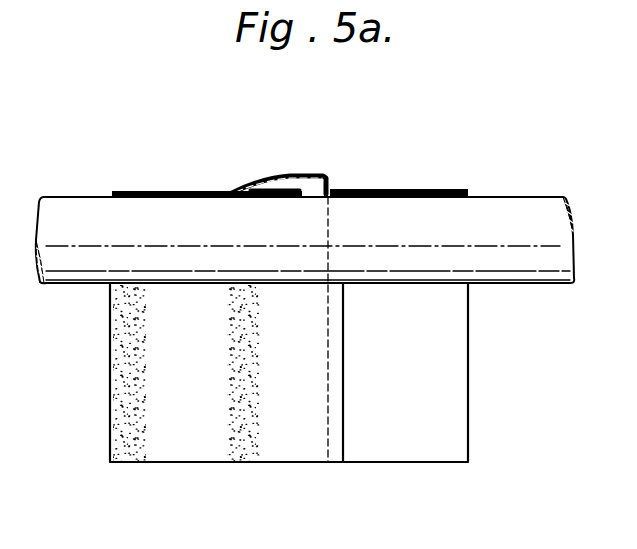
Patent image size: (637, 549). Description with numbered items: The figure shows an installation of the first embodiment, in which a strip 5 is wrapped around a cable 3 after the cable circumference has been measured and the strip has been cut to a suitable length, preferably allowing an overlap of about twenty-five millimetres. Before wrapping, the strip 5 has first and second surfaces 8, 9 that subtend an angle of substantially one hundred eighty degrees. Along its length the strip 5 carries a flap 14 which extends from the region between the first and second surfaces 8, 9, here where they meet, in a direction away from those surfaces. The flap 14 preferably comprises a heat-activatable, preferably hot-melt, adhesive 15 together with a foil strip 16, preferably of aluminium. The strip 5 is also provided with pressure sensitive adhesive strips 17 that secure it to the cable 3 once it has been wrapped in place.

The cable 3 is at (500, 207).
The strip 5 is at (144, 468).
The first surface 8 is at (281, 178).
The second surface 9 is at (165, 192).
The flap 14 is at (361, 190).
The heat-activatable adhesive 15 is at (296, 192).
The foil strip 16 is at (408, 190).
The pressure sensitive adhesive strips 17 is at (125, 192).